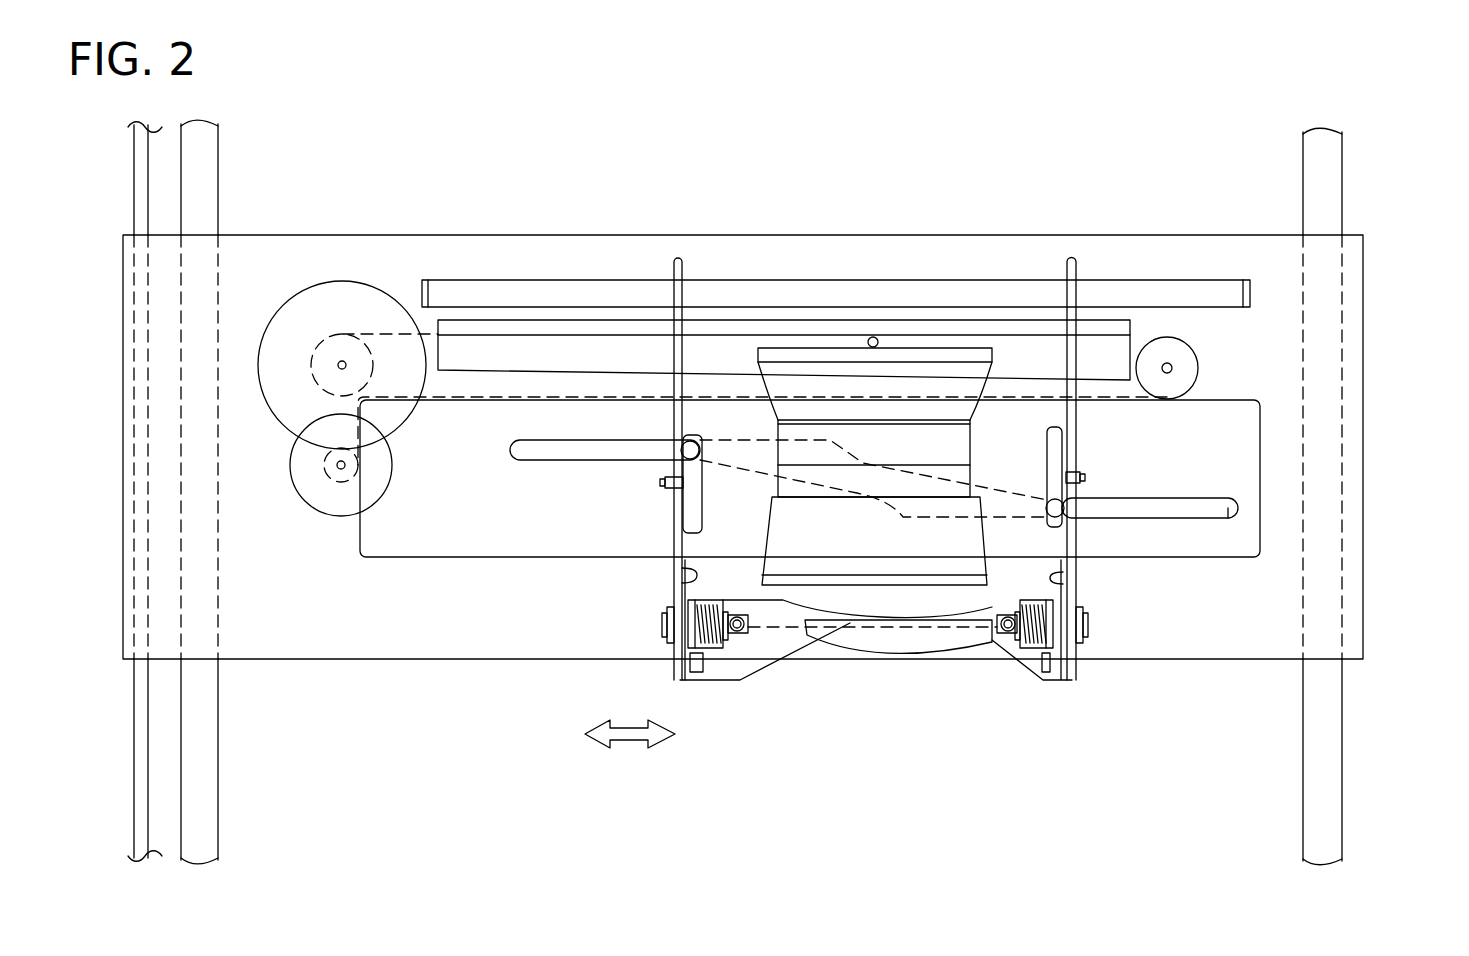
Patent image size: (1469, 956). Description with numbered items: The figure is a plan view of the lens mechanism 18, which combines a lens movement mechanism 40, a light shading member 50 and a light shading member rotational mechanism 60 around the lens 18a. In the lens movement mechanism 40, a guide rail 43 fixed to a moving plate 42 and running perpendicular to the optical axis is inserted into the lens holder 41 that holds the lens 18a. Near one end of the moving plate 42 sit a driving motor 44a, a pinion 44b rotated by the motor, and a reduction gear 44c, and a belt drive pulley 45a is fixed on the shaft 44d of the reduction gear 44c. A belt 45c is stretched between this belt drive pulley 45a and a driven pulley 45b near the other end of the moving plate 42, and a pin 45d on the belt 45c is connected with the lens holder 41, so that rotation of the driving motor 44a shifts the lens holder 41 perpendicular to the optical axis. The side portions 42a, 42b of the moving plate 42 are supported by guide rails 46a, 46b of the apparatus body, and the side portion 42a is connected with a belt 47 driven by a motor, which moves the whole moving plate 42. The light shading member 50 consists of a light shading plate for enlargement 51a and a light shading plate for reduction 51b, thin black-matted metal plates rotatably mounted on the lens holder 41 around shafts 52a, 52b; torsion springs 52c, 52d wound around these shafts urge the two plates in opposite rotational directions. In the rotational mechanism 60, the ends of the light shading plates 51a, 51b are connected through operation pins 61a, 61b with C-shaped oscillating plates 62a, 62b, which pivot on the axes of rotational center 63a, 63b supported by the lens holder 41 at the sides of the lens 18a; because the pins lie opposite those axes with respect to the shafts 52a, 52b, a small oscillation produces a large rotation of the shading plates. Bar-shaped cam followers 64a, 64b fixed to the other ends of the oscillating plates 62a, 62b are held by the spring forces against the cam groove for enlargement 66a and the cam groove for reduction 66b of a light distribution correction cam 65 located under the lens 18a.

The lens mechanism 18 is at (1160, 676).
The lens 18a is at (992, 353).
The lens movement mechanism 40 is at (273, 673).
The lens holder 41 is at (1077, 264).
The moving plate 42 is at (553, 255).
The side portion 42a is at (157, 552).
The side portion 42b is at (1323, 480).
The guide rail 43 is at (1212, 284).
The driving motor 44a is at (342, 500).
The pinion 44b is at (327, 470).
The reduction gear 44c is at (327, 282).
The shaft 44d is at (343, 363).
The belt drive pulley 45a is at (313, 350).
The driven pulley 45b is at (1182, 358).
The belt 45c is at (477, 337).
The pin 45d is at (873, 337).
The guide rail 46a is at (218, 802).
The guide rail 46b is at (1340, 745).
The belt 47 is at (130, 803).
The light shading member 50 is at (1000, 665).
The light shading plate for enlargement 51a is at (890, 642).
The light shading plate for reduction 51b is at (756, 672).
The shaft 52a is at (1087, 622).
The shaft 52b is at (662, 623).
The torsion spring 52c is at (1030, 600).
The torsion spring 52d is at (697, 600).
The light shading member rotational mechanism 60 is at (1197, 576).
The operation pin 61a is at (1067, 680).
The operation pin 61b is at (673, 680).
The oscillating plate 62a is at (1075, 573).
The oscillating plate 62b is at (687, 573).
The axis of rotational center of the oscillating plate 63a is at (1080, 476).
The axis of rotational center of the oscillating plate 63b is at (663, 482).
The cam follower 64a is at (1047, 504).
The cam follower 64b is at (699, 452).
The light distribution correction cam 65 is at (412, 518).
The cam groove for enlargement 66a is at (1150, 498).
The cam groove for reduction 66b is at (1227, 518).